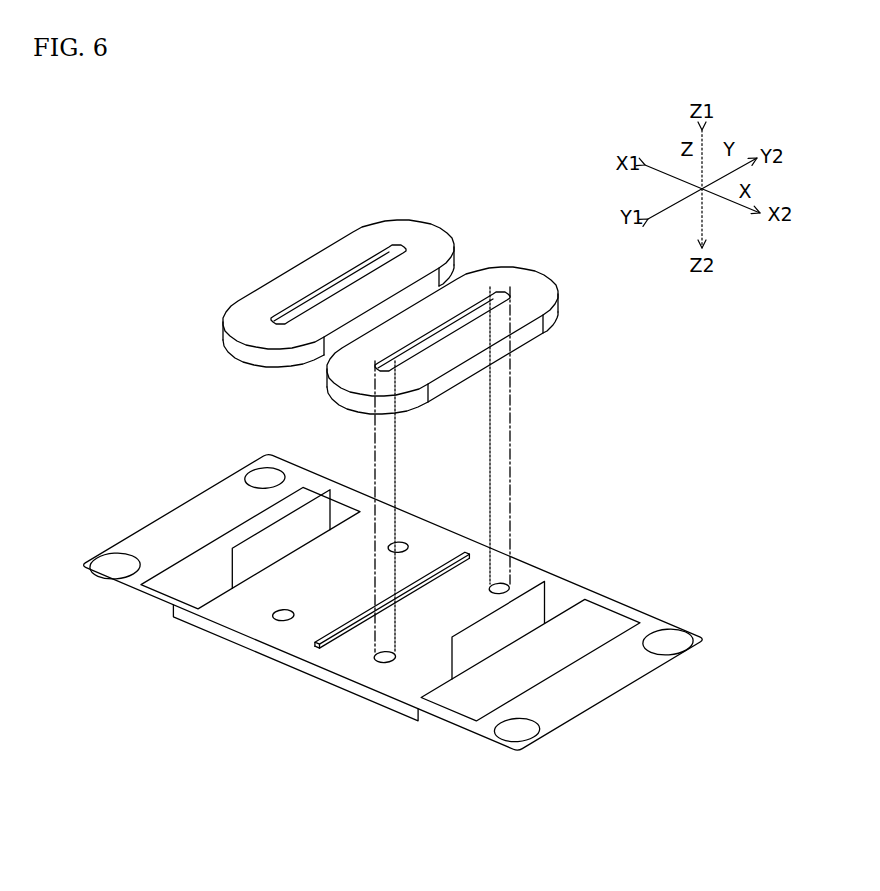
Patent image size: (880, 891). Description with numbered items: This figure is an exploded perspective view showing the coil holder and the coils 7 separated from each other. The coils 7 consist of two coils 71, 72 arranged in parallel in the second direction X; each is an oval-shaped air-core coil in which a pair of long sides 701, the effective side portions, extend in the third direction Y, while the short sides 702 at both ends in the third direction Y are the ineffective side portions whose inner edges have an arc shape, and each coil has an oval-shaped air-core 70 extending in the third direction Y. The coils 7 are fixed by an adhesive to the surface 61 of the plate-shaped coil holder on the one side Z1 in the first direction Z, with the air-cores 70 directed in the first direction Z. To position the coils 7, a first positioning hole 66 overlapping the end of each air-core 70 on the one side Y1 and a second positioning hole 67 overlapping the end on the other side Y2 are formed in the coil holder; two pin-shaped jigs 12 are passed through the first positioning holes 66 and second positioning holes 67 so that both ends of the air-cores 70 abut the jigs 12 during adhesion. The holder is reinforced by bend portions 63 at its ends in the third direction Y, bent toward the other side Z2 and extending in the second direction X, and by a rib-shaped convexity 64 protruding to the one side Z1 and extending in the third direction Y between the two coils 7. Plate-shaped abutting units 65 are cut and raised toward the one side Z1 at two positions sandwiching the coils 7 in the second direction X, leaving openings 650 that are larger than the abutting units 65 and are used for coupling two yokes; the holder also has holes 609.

The coil 7 is at (392, 275).
The coil 71 is at (357, 226).
The coil 72 is at (504, 261).
The air-core 70 is at (342, 277).
The long side 701 is at (333, 313).
The short side 702 is at (423, 240).
The jig 12 is at (373, 423).
The surface 61 is at (517, 565).
The bend portion 63 is at (287, 665).
The rib-shaped convexity 64 is at (333, 645).
The abutting unit 65 is at (273, 533).
The opening 650 is at (190, 555).
The first positioning hole 66 is at (266, 618).
The second positioning hole 67 is at (402, 542).
The mounting hole 609 is at (262, 466).